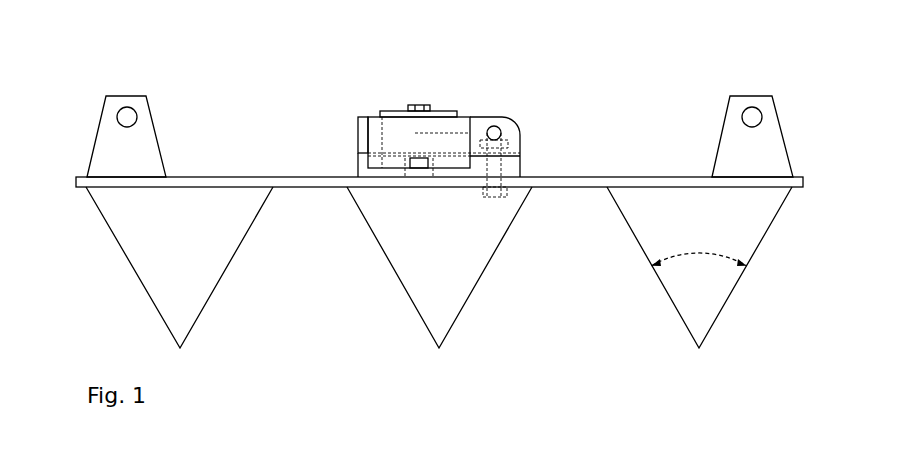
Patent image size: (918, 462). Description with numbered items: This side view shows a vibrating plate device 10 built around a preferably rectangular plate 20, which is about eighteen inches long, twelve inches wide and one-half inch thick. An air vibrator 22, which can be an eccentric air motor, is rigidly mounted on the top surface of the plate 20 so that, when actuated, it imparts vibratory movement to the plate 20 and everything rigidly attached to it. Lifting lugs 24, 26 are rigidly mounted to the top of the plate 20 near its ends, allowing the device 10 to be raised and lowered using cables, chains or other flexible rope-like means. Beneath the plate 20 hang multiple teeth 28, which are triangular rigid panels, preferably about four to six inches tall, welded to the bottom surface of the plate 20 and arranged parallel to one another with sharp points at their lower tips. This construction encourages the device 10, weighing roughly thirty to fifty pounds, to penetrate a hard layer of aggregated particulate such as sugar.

The vibrating plate device 10 is at (206, 72).
The plate 20 is at (580, 178).
The air vibrator 22 is at (498, 102).
The lifting lug 24 is at (95, 138).
The lifting lug 26 is at (782, 130).
The teeth 28 is at (388, 263).